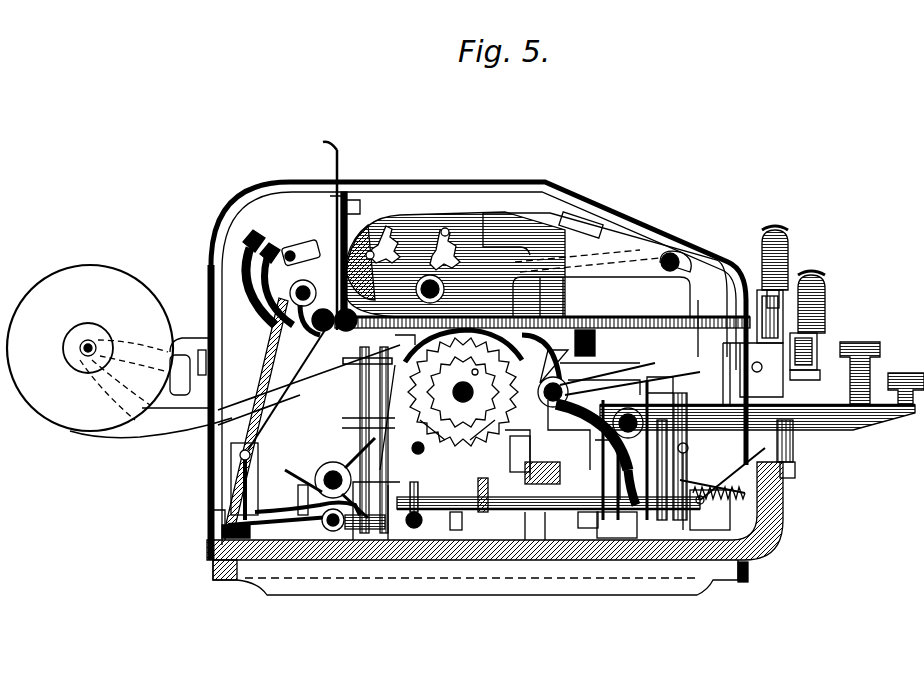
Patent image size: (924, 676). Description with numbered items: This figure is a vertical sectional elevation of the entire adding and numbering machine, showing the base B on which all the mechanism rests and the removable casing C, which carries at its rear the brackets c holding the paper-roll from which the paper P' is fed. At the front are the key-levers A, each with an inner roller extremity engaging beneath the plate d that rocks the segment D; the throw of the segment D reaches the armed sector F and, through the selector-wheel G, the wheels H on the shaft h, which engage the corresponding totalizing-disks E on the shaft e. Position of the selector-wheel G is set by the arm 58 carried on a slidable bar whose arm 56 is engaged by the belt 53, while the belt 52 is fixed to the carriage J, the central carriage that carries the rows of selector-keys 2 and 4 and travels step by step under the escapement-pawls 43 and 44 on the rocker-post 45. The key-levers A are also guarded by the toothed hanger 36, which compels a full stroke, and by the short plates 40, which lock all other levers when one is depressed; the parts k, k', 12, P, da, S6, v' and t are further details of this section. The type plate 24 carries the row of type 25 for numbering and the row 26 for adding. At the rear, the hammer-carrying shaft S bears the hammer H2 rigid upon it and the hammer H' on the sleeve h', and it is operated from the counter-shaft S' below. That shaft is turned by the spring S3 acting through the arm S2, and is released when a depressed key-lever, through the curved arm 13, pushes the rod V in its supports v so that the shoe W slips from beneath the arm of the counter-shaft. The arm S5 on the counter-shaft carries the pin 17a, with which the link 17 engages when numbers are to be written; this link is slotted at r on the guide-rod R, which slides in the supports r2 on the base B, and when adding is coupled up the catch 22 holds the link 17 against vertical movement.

The removable casing C is at (240, 207).
The base or body B is at (784, 520).
The paper P' is at (184, 295).
The brackets c is at (185, 338).
The carriage J is at (632, 316).
The wheels H is at (536, 284).
The shaft h is at (436, 292).
The totalizing-disks E is at (383, 238).
The shaft e is at (413, 249).
The type plate or bar 24 is at (350, 225).
The row of type for adding 26 is at (336, 217).
The row of type for numbering 25 is at (337, 230).
The hammer H2 is at (258, 235).
The hammer H' is at (279, 275).
The sleeve h' is at (306, 261).
The hammer-carrying shaft S is at (291, 400).
The link 17 is at (309, 385).
The guide-rod R is at (258, 432).
The slots r is at (250, 416).
The supports r2 is at (252, 406).
The arm S5 is at (307, 483).
The lateral pin 17a is at (222, 514).
The special catch 22 is at (211, 532).
The arm S2 is at (279, 503).
The spring S3 is at (320, 540).
The counter-shaft S' is at (382, 510).
The escapement-pawl 44 is at (356, 440).
The escapement-pawl 43 is at (356, 440).
The vertical rocker-post 45 is at (402, 403).
The selector-wheel G is at (463, 397).
The armed sector F is at (478, 380).
The shaft S6 is at (457, 447).
The rocking segment D is at (545, 359).
The wing or plate d is at (619, 415).
The arm da is at (600, 414).
The metal belt 52 is at (596, 345).
The metal belt 53 is at (600, 368).
The arm 58 is at (519, 454).
The arm 56 is at (584, 450).
The rod V is at (548, 518).
The sliding right-angled shoe W is at (415, 510).
The supports v is at (523, 523).
The post v' is at (486, 504).
The curved arm 13 is at (663, 465).
The platen bar P is at (757, 386).
The selector-keys 4 is at (788, 256).
The selector-keys 2 is at (825, 300).
The key lever k' is at (801, 316).
The key lever k is at (815, 351).
The pin 12 is at (820, 376).
The key-levers A is at (882, 373).
The short plates 40 is at (787, 446).
The toothed hanger 36 is at (728, 470).
The spring t is at (711, 486).